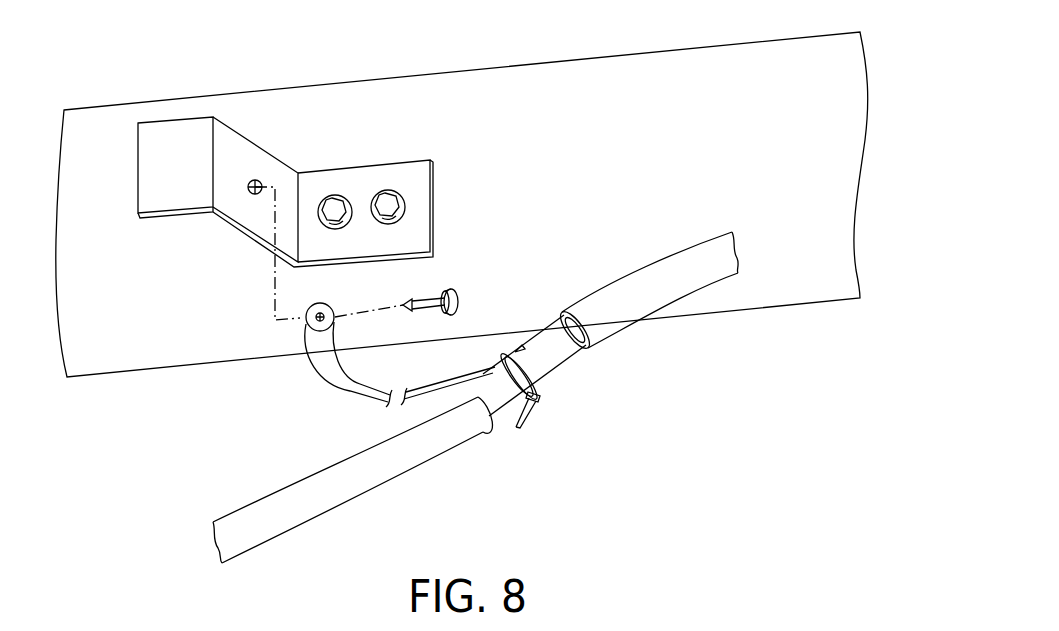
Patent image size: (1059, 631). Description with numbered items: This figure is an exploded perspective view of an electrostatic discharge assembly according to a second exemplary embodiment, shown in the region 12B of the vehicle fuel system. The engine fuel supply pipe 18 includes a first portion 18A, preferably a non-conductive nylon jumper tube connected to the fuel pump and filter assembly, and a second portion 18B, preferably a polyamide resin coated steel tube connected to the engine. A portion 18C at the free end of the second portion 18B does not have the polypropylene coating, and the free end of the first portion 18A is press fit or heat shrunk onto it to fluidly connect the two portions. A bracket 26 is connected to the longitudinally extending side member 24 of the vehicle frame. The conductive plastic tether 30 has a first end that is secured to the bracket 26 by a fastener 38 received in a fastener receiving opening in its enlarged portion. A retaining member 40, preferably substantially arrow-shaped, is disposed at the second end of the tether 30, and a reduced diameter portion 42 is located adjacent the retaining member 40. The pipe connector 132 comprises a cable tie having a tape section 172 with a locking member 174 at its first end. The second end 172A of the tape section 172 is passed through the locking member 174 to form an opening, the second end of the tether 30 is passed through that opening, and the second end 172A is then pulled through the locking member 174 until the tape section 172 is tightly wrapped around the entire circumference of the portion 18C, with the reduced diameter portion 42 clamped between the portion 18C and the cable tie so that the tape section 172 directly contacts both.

The hose routing assembly 12B is at (690, 480).
The engine fuel supply pipe 18 is at (475, 388).
The first portion 18A is at (240, 530).
The second portion 18B is at (690, 273).
The portion 18C is at (493, 413).
The longitudinally extending side member 24 is at (747, 108).
The bracket 26 is at (257, 143).
The conductive plastic tether 30 is at (348, 386).
The fastener 38 is at (453, 296).
The retaining member 40 is at (520, 350).
The reduced diameter portion 42 is at (525, 374).
The pipe connector 132 is at (535, 361).
The tape section 172 is at (538, 368).
The second end 172A is at (525, 425).
The locking member 174 is at (538, 400).